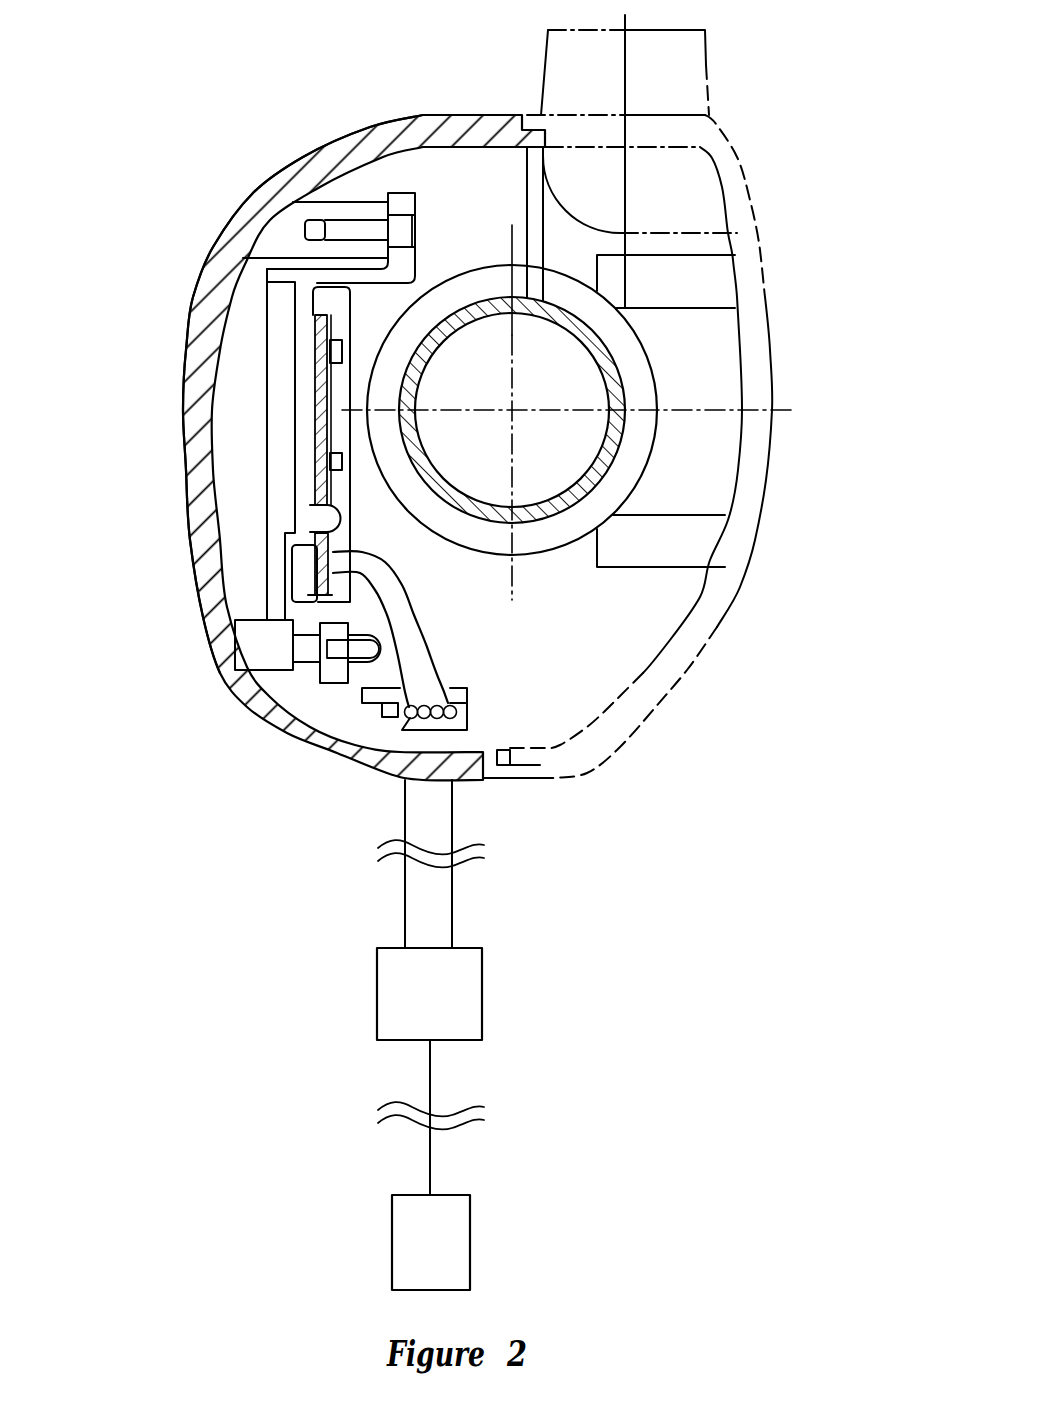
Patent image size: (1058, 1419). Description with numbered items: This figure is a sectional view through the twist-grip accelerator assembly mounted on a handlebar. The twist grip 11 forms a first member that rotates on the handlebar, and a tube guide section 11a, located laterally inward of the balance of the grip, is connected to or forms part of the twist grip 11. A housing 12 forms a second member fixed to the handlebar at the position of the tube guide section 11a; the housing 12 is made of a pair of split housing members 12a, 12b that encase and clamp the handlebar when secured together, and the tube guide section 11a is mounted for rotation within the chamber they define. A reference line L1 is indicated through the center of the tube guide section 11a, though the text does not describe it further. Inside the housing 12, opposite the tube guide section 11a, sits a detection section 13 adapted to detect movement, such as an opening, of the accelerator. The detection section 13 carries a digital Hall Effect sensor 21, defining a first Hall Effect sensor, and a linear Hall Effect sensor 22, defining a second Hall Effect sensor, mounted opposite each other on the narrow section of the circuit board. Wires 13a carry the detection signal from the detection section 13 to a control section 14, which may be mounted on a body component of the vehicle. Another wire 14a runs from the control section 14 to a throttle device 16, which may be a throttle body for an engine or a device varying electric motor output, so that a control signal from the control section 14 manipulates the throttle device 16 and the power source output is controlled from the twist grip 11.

The twist grip 11 is at (650, 467).
The tube guide section 11a is at (630, 400).
The housing 12 is at (462, 113).
The split housing member 12a is at (187, 498).
The split housing member 12b is at (740, 587).
The detection section 13 is at (268, 403).
The wires 13a is at (430, 633).
The control section 14 is at (482, 1008).
The wire 14a is at (430, 1075).
The throttle device 16 is at (470, 1243).
The digital Hall Effect sensor 21 is at (333, 353).
The linear Hall Effect sensor 22 is at (333, 464).
The center axis L1 is at (512, 410).